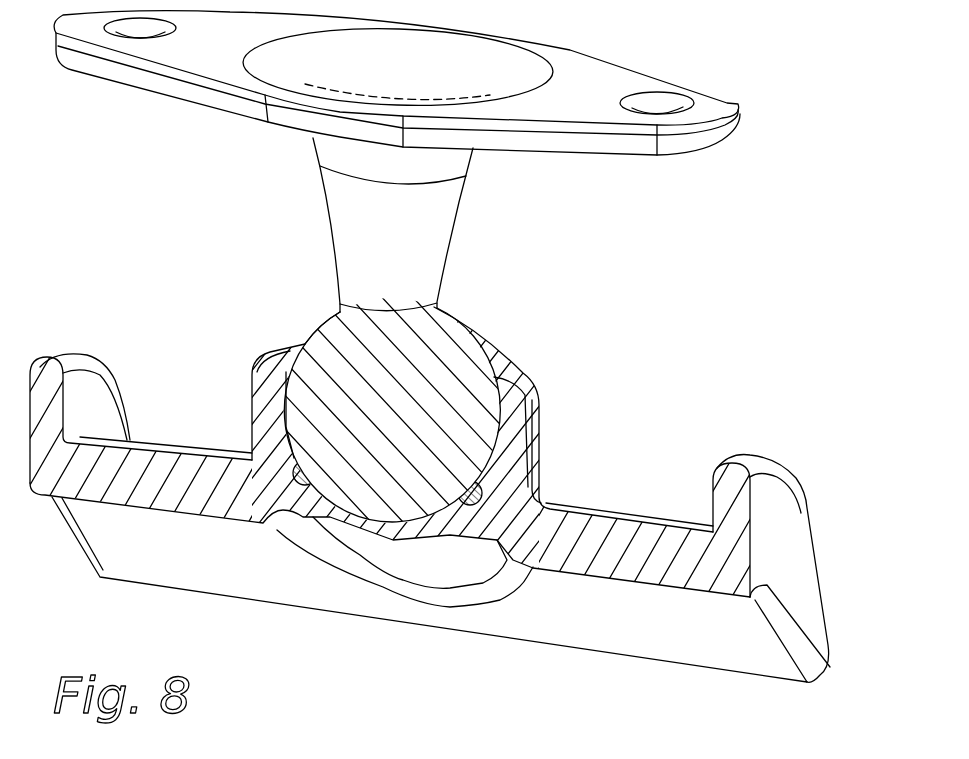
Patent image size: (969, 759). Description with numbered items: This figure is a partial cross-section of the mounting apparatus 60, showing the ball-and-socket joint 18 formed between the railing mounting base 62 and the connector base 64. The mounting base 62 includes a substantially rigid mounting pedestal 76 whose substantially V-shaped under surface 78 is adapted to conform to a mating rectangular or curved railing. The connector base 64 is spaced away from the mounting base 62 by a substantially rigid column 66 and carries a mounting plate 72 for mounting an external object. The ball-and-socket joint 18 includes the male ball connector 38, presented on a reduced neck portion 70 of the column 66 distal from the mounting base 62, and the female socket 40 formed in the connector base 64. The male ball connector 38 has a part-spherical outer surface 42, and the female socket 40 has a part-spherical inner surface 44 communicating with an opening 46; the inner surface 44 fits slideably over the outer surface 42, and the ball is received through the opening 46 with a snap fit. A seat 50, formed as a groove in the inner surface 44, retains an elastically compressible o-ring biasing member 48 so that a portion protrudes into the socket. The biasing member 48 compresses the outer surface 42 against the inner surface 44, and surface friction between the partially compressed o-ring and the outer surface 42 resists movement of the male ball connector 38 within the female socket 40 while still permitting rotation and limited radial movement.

The ball-and-socket joint 18 is at (320, 318).
The male ball connector 38 is at (402, 411).
The female socket 40 is at (278, 350).
The part-spherical outer surface 42 is at (462, 322).
The part-spherical inner surface 44 is at (262, 356).
The opening 46 is at (494, 377).
The biasing member 48 is at (486, 483).
The seat 50 is at (290, 443).
The mounting apparatus 60 is at (704, 285).
The mounting base 62 is at (210, 450).
The connector base 64 is at (170, 97).
The column 66 is at (406, 247).
The reduced neck portion 70 is at (430, 288).
The mounting plate 72 is at (604, 73).
The mounting pedestal 76 is at (764, 458).
The V-shaped under surface 78 is at (593, 626).